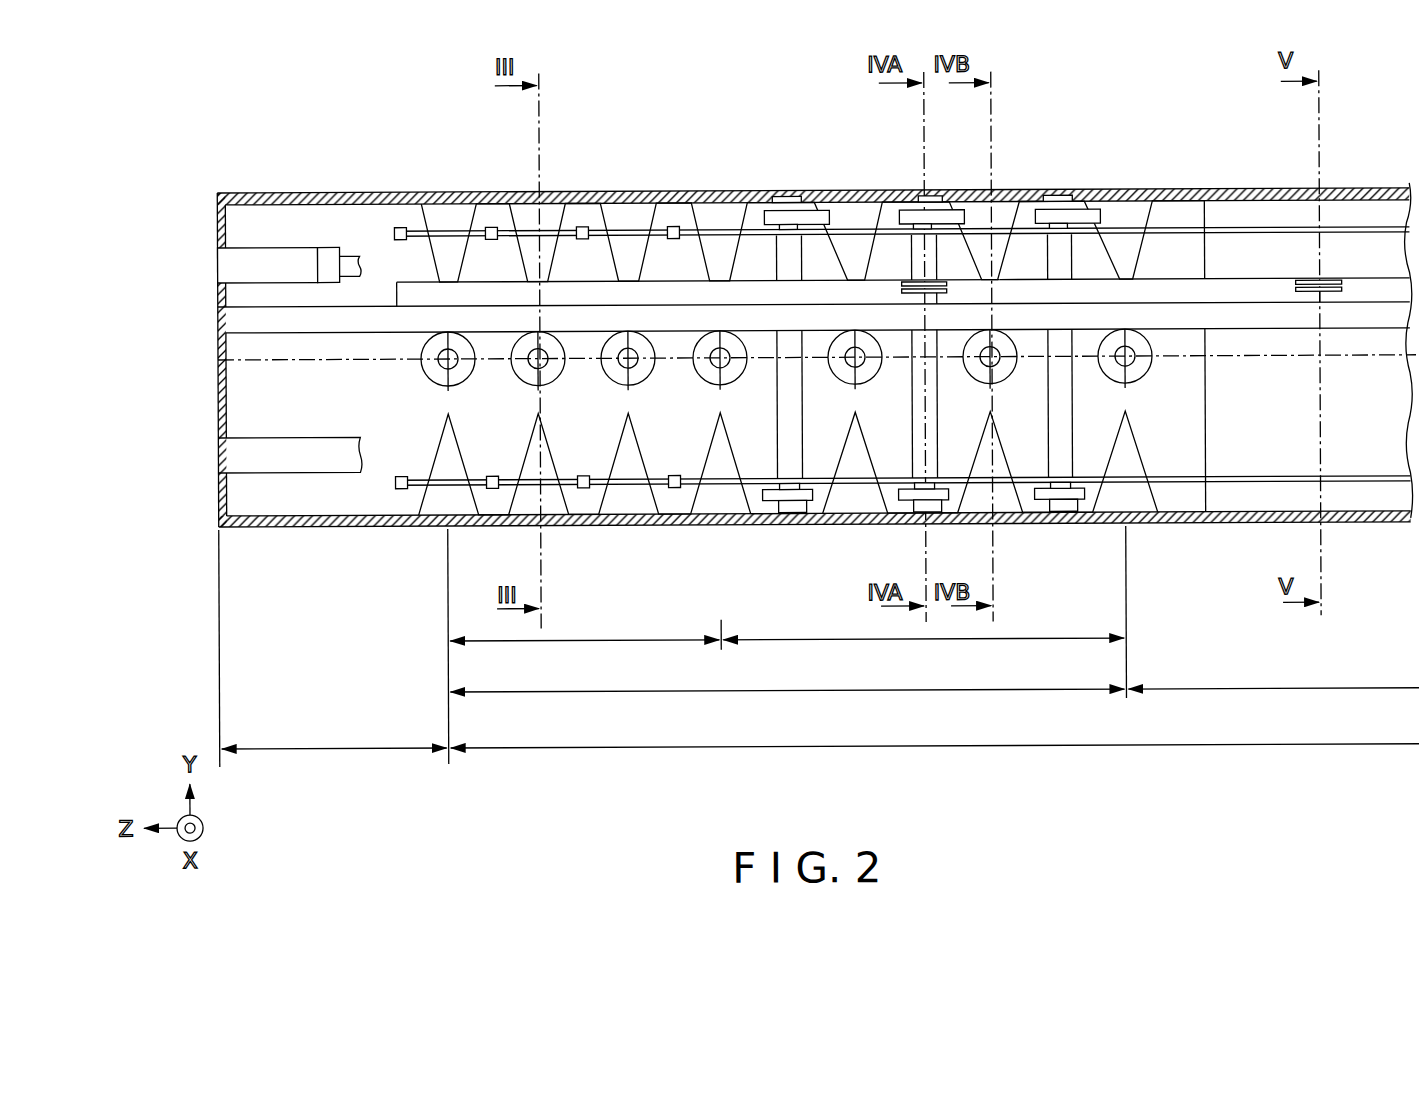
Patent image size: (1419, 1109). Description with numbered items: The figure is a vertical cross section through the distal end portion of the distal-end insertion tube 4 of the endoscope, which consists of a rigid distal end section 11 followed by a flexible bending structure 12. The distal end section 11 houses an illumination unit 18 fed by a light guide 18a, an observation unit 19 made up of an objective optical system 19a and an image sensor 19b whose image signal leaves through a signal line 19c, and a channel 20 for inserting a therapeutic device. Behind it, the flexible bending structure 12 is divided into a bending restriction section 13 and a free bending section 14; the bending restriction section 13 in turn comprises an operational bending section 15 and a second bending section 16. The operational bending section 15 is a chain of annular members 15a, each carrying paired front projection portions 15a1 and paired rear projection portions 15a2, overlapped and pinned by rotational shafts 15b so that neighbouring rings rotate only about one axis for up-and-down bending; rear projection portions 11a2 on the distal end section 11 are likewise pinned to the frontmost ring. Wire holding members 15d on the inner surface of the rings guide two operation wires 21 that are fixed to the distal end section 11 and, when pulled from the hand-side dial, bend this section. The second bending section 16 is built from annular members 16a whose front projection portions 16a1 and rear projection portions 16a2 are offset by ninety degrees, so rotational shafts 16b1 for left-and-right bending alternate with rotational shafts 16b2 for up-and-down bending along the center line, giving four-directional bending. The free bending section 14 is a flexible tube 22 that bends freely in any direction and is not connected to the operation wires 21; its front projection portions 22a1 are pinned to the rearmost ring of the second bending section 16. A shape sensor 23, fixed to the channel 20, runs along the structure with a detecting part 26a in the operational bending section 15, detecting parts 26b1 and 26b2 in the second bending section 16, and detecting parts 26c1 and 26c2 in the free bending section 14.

The distal-end insertion tube 4 is at (1062, 96).
The distal end section 11 is at (335, 747).
The rear projection portions 11a2 is at (456, 372).
The flexible bending structure 12 is at (810, 747).
The bending restriction section 13 is at (810, 691).
The free bending section 14 is at (1350, 691).
The operational bending section 15 is at (633, 640).
The annular members 15a is at (456, 255).
The front projection portions 15a1 is at (432, 380).
The rear projection portions 15a2 is at (730, 374).
The rotational shafts 15b is at (455, 355).
The wire holding members 15d is at (493, 228).
The second bending section 16 is at (1045, 640).
The annular members 16a is at (750, 205).
The front projection portions 16a1 is at (782, 211).
The rear projection portions 16a2 is at (800, 199).
The rotational shafts 16b1 is at (791, 515).
The rotational shafts 16b2 is at (847, 376).
The illumination unit 18 is at (206, 456).
The light guide 18a is at (257, 445).
The observation unit 19 is at (206, 267).
The objective optical system 19a is at (257, 258).
The image sensor 19b is at (328, 251).
The signal line 19c is at (356, 257).
The channel 20 is at (227, 322).
The operation wires 21 is at (630, 228).
The flexible tube 22 is at (1250, 205).
The front projection portions 22a1 is at (1120, 378).
The shape sensor 23 is at (1023, 288).
The detecting part 26a is at (573, 290).
The detecting part 26b1 is at (942, 290).
The detecting part 26b2 is at (935, 302).
The detecting part 26c1 is at (1329, 282).
The detecting part 26c2 is at (1330, 298).